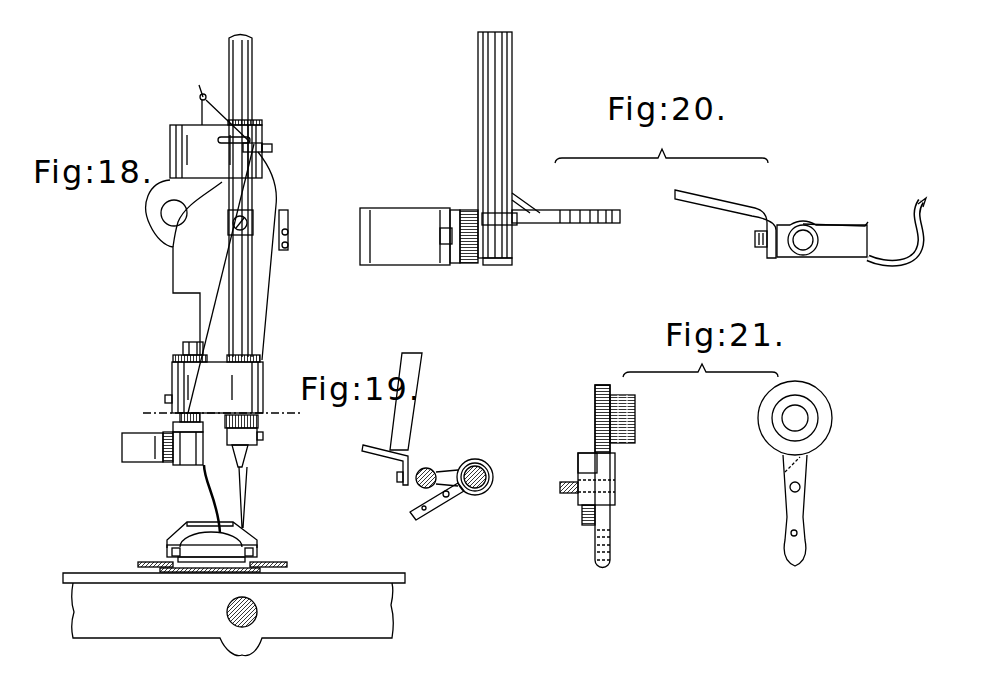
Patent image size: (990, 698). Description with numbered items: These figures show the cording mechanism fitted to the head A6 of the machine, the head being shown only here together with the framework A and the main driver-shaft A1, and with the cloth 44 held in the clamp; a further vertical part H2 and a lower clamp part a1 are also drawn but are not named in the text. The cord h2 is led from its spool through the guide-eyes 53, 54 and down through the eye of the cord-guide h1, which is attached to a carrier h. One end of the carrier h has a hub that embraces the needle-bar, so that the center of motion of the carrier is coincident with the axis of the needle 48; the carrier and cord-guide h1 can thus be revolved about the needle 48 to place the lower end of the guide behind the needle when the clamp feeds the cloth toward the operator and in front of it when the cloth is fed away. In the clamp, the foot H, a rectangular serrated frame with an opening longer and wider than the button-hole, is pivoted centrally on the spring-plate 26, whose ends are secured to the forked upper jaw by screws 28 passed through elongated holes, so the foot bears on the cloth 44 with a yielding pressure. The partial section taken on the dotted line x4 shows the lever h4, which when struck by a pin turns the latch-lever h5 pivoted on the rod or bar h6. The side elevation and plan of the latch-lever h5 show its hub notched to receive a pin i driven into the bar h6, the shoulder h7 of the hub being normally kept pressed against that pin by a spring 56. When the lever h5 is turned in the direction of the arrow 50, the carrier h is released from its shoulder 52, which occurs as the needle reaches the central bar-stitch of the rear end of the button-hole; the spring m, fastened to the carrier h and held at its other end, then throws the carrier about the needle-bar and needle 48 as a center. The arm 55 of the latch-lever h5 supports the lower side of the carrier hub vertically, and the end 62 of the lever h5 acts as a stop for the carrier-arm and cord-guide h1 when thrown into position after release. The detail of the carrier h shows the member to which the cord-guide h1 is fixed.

In FIG. 18, the guide-eye 53 is at (199, 98).
In FIG. 18, the guide-eye 54 is at (264, 144).
In FIG. 18, the head A6 is at (216, 149).
In FIG. 18, the cord h2 is at (224, 266).
In FIG. 18, the vertical rod H2 is at (250, 305).
In FIG. 18, the rod or bar h6 is at (183, 349).
In FIG. 19, the rod or bar h6 is at (418, 488).
In FIG. 18, the dotted line x4 is at (219, 412).
In FIG. 18, the spring m is at (262, 428).
In FIG. 19, the spring m is at (487, 466).
In FIG. 18, the latch-lever h5 is at (147, 447).
In FIG. 19, the latch-lever h5 is at (454, 463).
In FIG. 20, the latch-lever h5 is at (568, 223).
In FIG. 18, the carrier h is at (195, 439).
In FIG. 21, the carrier h is at (592, 432).
In FIG. 18, the cord-guide h1 is at (188, 486).
In FIG. 19, the cord-guide h1 is at (446, 503).
In FIG. 21, the cord-guide h1 is at (576, 481).
In FIG. 18, the needle 48 is at (246, 480).
In FIG. 18, the work holder a1 is at (187, 524).
In FIG. 18, the screws 28 is at (167, 550).
In FIG. 18, the spring-plate 26 is at (211, 551).
In FIG. 18, the cloth 44 is at (276, 565).
In FIG. 18, the framework A is at (234, 606).
In FIG. 18, the throat plate a is at (162, 575).
In FIG. 18, the foot H is at (196, 578).
In FIG. 18, the main driver-shaft A1 is at (257, 612).
In FIG. 19, the lever h4 is at (414, 401).
In FIG. 20, the shoulder h7 is at (494, 266).
In FIG. 20, the pin i is at (511, 266).
In FIG. 20, the spring 56 is at (856, 225).
In FIG. 20, the arrow 50 is at (878, 219).
In FIG. 20, the end of lever 62 is at (925, 205).
In FIG. 20, the arm 55 is at (921, 229).
In FIG. 20, the shoulder 52 is at (864, 261).